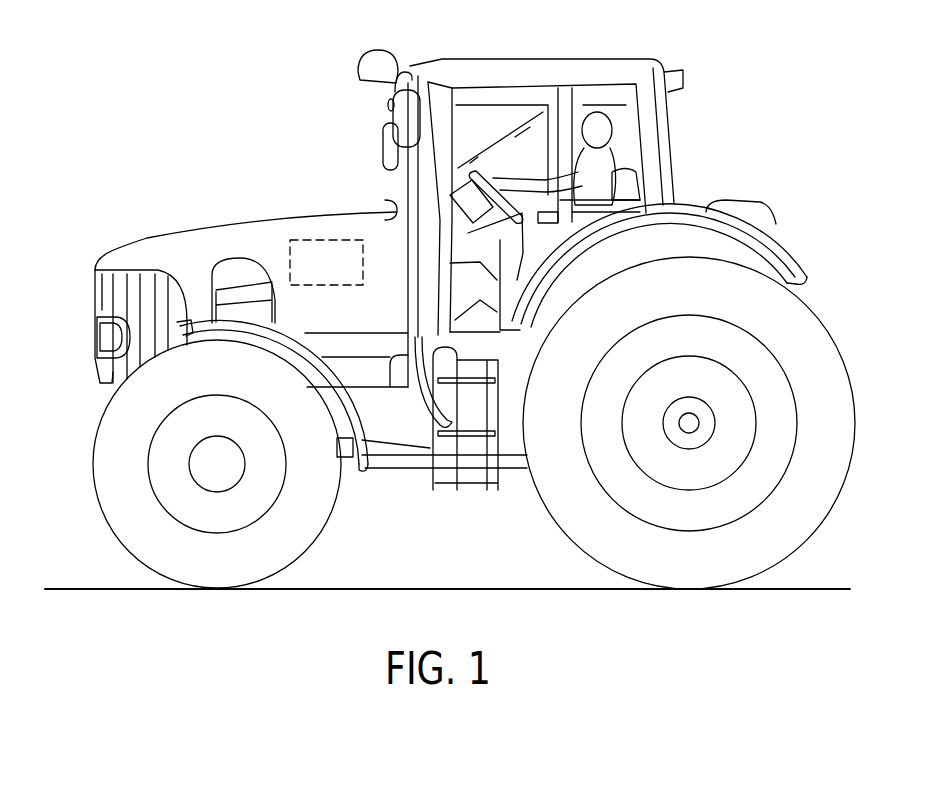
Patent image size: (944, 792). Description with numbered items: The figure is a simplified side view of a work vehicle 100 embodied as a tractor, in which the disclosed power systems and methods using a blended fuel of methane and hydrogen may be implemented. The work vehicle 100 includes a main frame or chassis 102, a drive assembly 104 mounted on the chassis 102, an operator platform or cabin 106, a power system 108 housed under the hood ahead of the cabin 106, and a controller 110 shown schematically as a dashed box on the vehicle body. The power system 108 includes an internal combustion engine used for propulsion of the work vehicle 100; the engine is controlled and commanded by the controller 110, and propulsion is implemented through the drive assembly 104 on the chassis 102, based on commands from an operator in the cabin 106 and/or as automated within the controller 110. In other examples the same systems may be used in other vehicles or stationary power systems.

The work vehicle 100 is at (680, 43).
The chassis 102 is at (342, 453).
The drive assembly 104 is at (198, 468).
The cabin 106 is at (492, 78).
The power system 108 is at (182, 255).
The controller 110 is at (328, 238).